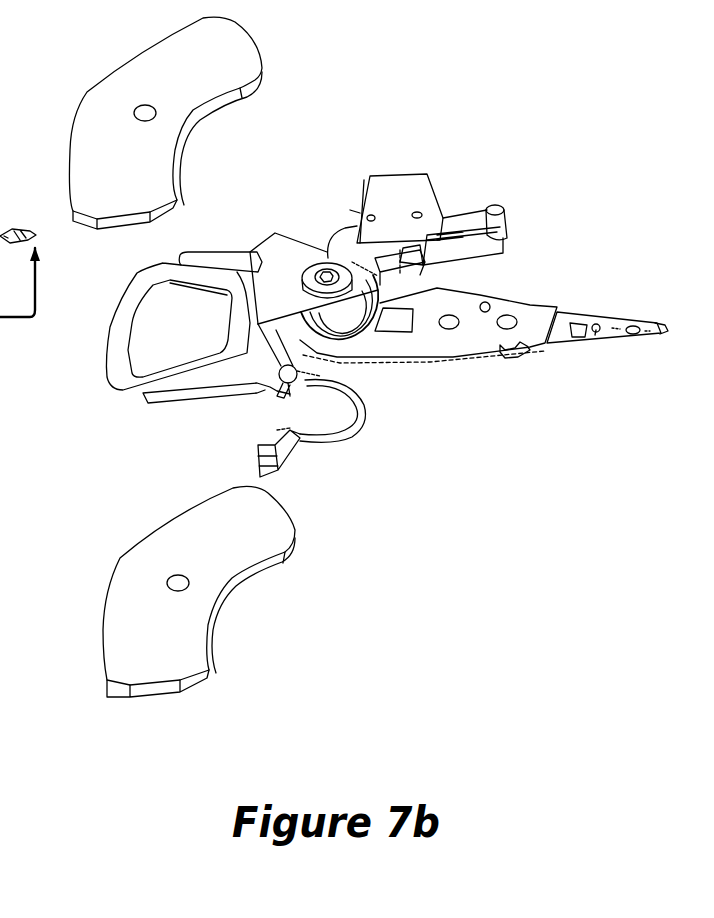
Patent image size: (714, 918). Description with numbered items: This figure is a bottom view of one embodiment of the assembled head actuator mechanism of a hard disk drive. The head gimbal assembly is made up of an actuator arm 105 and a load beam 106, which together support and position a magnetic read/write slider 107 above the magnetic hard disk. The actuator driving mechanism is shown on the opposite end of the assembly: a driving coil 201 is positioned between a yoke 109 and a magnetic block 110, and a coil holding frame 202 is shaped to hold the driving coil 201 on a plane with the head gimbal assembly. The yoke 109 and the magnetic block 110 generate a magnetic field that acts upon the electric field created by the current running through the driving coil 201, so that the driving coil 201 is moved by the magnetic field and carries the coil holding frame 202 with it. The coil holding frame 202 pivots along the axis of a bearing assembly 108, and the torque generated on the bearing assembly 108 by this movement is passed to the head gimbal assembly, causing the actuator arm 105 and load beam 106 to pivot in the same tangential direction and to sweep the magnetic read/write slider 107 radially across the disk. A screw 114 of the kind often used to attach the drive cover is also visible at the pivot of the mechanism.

The actuator arm 105 is at (476, 326).
The load beam 106 is at (582, 314).
The magnetic read/write slider 107 is at (660, 338).
The bearing assembly 108 is at (383, 290).
The yoke 109 is at (178, 62).
The magnetic block 110 is at (137, 592).
The screws 114 is at (322, 268).
The driving coil 201 is at (130, 392).
The coil holding frame 202 is at (243, 246).